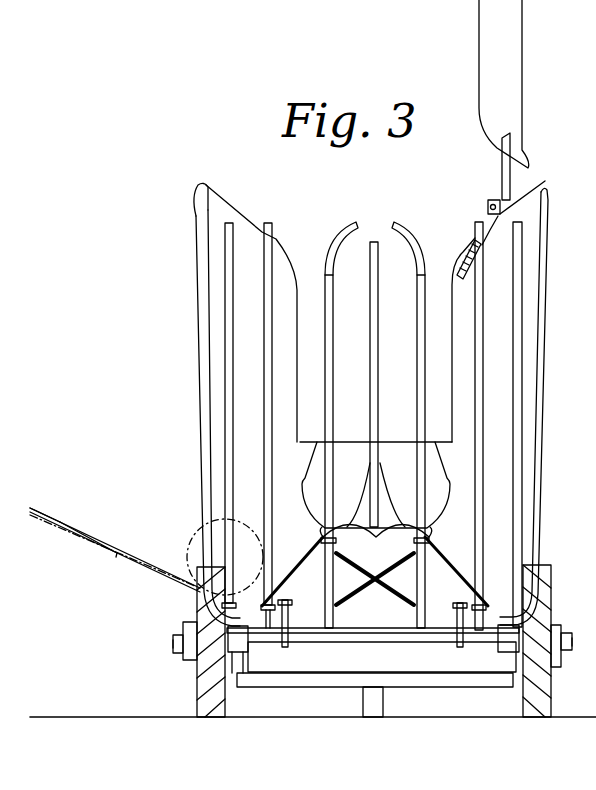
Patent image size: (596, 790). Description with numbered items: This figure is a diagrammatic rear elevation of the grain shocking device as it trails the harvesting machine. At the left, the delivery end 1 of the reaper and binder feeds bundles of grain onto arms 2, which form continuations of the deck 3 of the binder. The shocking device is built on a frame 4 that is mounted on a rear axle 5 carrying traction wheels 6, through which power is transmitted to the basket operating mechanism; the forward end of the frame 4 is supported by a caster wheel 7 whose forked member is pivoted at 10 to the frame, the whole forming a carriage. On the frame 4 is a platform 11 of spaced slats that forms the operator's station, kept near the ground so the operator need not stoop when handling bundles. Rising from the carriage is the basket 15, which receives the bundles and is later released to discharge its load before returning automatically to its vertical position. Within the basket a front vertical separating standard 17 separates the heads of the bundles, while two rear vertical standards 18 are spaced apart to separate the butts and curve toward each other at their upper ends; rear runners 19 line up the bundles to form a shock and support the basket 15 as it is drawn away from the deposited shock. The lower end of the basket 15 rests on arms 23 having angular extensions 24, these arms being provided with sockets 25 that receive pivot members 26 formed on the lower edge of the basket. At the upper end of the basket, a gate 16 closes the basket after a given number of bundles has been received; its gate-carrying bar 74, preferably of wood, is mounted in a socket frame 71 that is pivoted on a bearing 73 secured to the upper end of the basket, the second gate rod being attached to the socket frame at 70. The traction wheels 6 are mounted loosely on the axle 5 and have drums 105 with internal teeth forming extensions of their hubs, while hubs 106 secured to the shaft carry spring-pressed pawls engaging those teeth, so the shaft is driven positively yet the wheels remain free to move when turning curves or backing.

The delivery end of a reaper and binder 1 is at (45, 510).
The arms 2 is at (150, 566).
The deck 3 is at (87, 540).
The frame 4 is at (272, 683).
The rear axle 5 is at (182, 641).
The traction wheels 6 is at (195, 692).
The caster wheel 7 is at (380, 703).
The pivot 10 is at (513, 300).
The platform 11 is at (418, 677).
The basket 15 is at (208, 345).
The gate 16 is at (505, 75).
The front vertical separating standard 17 is at (376, 336).
The rear vertical standards 18 is at (326, 337).
The rear runners 19 is at (265, 351).
The arms 23 is at (290, 648).
The angular extensions 24 is at (290, 607).
The sockets 25 is at (297, 636).
The pivot members 26 is at (282, 645).
The attachment point 70 is at (488, 209).
The socket frame 71 is at (497, 198).
The bearing 73 is at (530, 194).
The gate-carrying bar 74 is at (501, 169).
The drums 105 is at (210, 672).
The hubs 106 is at (192, 655).